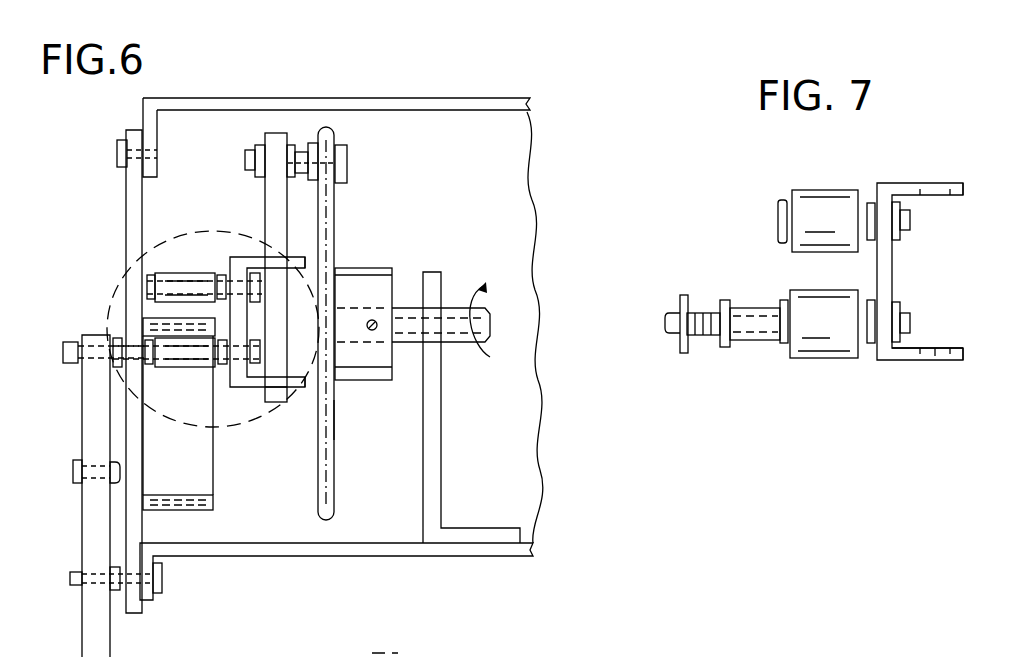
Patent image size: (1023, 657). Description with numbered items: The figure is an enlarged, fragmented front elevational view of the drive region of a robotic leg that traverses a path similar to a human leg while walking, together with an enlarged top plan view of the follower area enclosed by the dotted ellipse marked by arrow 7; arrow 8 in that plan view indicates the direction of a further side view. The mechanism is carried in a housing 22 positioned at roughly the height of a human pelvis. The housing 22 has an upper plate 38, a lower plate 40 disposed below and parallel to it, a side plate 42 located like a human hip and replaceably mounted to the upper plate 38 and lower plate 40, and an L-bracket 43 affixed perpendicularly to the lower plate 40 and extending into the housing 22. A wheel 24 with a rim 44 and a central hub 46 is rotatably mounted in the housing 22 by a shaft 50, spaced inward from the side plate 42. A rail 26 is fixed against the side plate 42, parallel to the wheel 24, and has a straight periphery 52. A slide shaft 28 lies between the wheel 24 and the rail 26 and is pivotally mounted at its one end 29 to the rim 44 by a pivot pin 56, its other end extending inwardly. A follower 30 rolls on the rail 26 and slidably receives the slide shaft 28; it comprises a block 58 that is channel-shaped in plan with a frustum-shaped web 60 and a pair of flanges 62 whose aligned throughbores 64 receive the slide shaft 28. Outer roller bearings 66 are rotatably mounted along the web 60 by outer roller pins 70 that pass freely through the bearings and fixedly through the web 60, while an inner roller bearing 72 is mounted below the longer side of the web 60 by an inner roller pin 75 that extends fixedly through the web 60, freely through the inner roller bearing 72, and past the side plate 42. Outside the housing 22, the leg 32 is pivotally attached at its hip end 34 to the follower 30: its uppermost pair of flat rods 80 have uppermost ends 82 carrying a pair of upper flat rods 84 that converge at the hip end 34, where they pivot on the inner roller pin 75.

In FIG. 6, the arrow 7 is at (210, 228).
In FIG. 7, the arrow 8 is at (710, 262).
In FIG. 6, the housing 22 is at (343, 297).
In FIG. 6, the wheel 24 is at (339, 465).
In FIG. 6, the rail 26 is at (201, 473).
In FIG. 6, the slide shaft 28 is at (261, 192).
In FIG. 6, the one end of slide shaft 29 is at (258, 143).
In FIG. 6, the follower 30 is at (244, 324).
In FIG. 7, the follower 30 is at (928, 278).
In FIG. 6, the leg 32 is at (79, 631).
In FIG. 6, the hip end of leg 34 is at (88, 335).
In FIG. 6, the upper plate 38 is at (428, 72).
In FIG. 6, the lower plate 40 is at (322, 547).
In FIG. 6, the side plate 42 is at (126, 187).
In FIG. 6, the L-bracket 43 is at (441, 427).
In FIG. 6, the rim 44 is at (334, 420).
In FIG. 6, the central hub 46 is at (377, 268).
In FIG. 6, the shaft 50 is at (412, 308).
In FIG. 6, the straight periphery 52 is at (172, 333).
In FIG. 6, the pivot pin 56 is at (302, 146).
In FIG. 6, the block 58 is at (254, 402).
In FIG. 7, the block 58 is at (906, 362).
In FIG. 6, the web 60 is at (232, 256).
In FIG. 7, the web 60 is at (893, 258).
In FIG. 6, the flanges 62 is at (303, 258).
In FIG. 7, the flanges 62 is at (964, 189).
In FIG. 7, the throughbores 64 is at (936, 203).
In FIG. 6, the outer roller bearings 66 is at (170, 273).
In FIG. 7, the outer roller bearings 66 is at (808, 192).
In FIG. 6, the outer roller pins 70 is at (150, 282).
In FIG. 7, the outer roller pins 70 is at (779, 213).
In FIG. 6, the inner roller bearing 72 is at (188, 358).
In FIG. 7, the inner roller bearing 72 is at (813, 358).
In FIG. 6, the inner roller pin 75 is at (118, 367).
In FIG. 7, the inner roller pin 75 is at (868, 346).
In FIG. 6, the uppermost pair of flat rods 80 is at (92, 528).
In FIG. 6, the uppermost ends 82 is at (89, 460).
In FIG. 6, the upper flat rods 84 is at (87, 400).